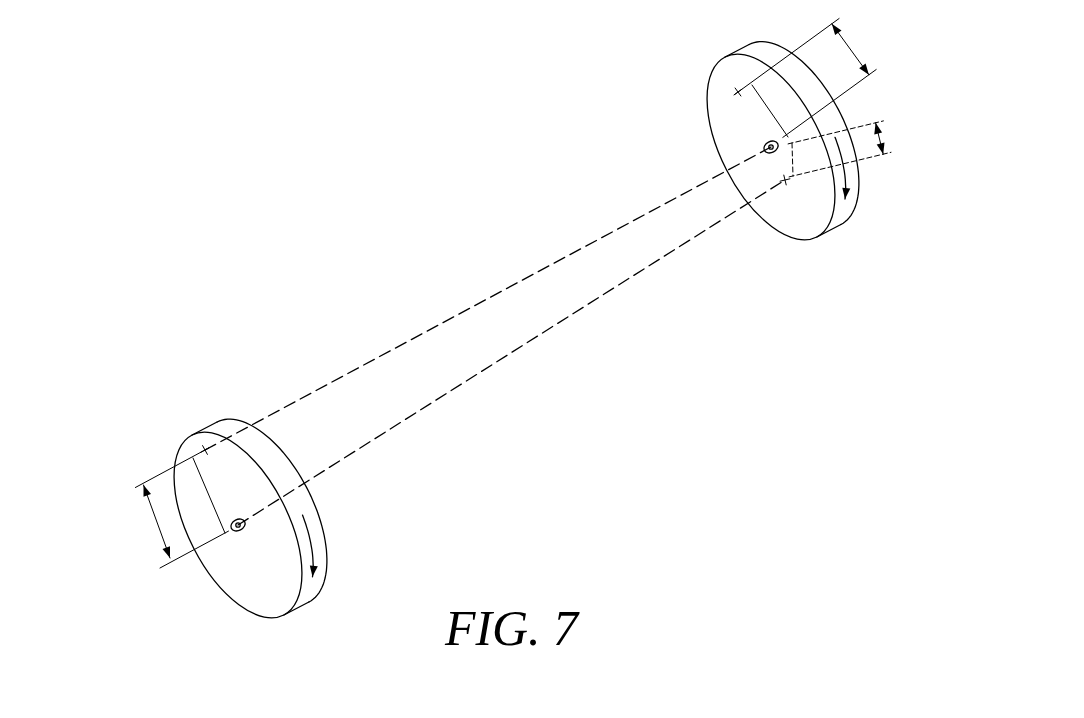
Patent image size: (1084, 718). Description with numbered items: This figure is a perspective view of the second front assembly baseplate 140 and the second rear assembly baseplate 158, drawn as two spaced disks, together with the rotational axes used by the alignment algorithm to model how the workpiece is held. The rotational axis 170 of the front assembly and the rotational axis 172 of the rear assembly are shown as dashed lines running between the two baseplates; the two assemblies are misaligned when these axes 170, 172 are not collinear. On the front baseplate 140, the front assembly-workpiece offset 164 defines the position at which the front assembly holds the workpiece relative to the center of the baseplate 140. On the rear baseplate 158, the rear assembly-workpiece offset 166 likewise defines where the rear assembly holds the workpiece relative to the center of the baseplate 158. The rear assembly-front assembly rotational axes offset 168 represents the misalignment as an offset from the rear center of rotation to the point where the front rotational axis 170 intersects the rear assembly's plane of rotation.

The second front assembly baseplate 140 is at (201, 430).
The second rear assembly baseplate 158 is at (740, 55).
The front assembly-workpiece offset 164 is at (157, 527).
The rear assembly-workpiece offset 166 is at (853, 45).
The rear assembly-front assembly rotational axes offset 168 is at (882, 136).
The rotational axis of the front assembly 170 is at (436, 402).
The rotational axis of the rear assembly 172 is at (355, 369).